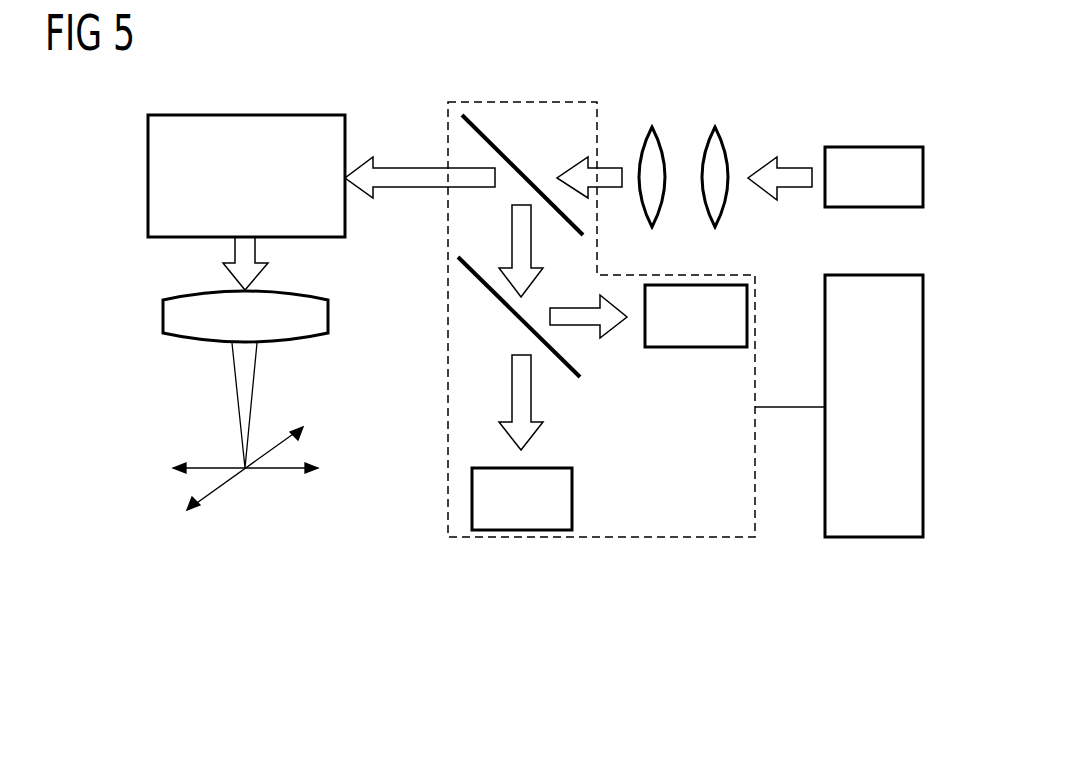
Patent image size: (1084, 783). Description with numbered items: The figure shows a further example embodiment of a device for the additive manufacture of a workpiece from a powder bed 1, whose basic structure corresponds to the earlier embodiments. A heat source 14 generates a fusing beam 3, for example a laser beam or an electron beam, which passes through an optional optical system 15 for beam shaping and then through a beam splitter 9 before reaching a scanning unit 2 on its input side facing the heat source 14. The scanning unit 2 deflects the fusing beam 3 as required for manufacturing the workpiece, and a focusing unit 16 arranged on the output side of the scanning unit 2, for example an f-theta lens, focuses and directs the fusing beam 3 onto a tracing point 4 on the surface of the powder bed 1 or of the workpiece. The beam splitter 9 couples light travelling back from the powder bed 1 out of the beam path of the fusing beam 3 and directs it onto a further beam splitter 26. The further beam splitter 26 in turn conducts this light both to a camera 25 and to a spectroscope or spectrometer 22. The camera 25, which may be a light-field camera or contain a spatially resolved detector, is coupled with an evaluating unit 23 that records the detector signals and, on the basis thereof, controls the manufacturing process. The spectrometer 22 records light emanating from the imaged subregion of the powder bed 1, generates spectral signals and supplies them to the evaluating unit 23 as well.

The powder bed 1 is at (294, 524).
The scanning unit 2 is at (148, 180).
The fusing beam 3 is at (402, 168).
The tracing point 4 is at (245, 470).
The beam splitter 9 is at (524, 172).
The heat source 14 is at (877, 147).
The optical system 15 is at (729, 121).
The focusing unit 16 is at (163, 316).
The spectrometer 22 is at (522, 532).
The evaluating unit 23 is at (873, 540).
The camera 25 is at (692, 350).
The further beam splitter 26 is at (468, 262).